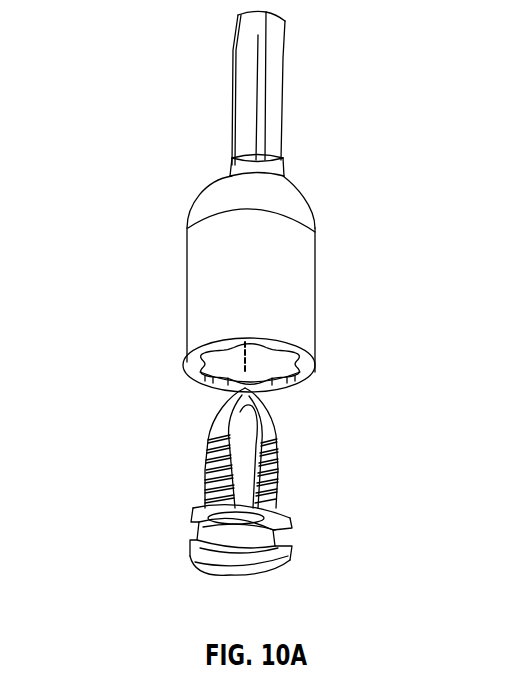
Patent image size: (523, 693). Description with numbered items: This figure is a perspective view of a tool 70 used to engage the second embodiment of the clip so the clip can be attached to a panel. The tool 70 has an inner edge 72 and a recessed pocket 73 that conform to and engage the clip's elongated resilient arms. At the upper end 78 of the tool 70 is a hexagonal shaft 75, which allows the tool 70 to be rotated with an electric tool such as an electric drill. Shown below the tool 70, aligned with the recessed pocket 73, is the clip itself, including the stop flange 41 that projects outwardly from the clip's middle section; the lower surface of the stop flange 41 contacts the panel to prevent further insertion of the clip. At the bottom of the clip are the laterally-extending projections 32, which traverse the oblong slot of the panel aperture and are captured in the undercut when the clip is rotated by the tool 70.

The tool 70 is at (350, 197).
The hexagonal shaft 75 is at (272, 100).
The upper end 78 is at (280, 143).
The inner edge 72 is at (290, 372).
The recessed pocket 73 is at (238, 355).
The stop flange 41 is at (258, 517).
The laterally-extending projections 32 is at (188, 553).